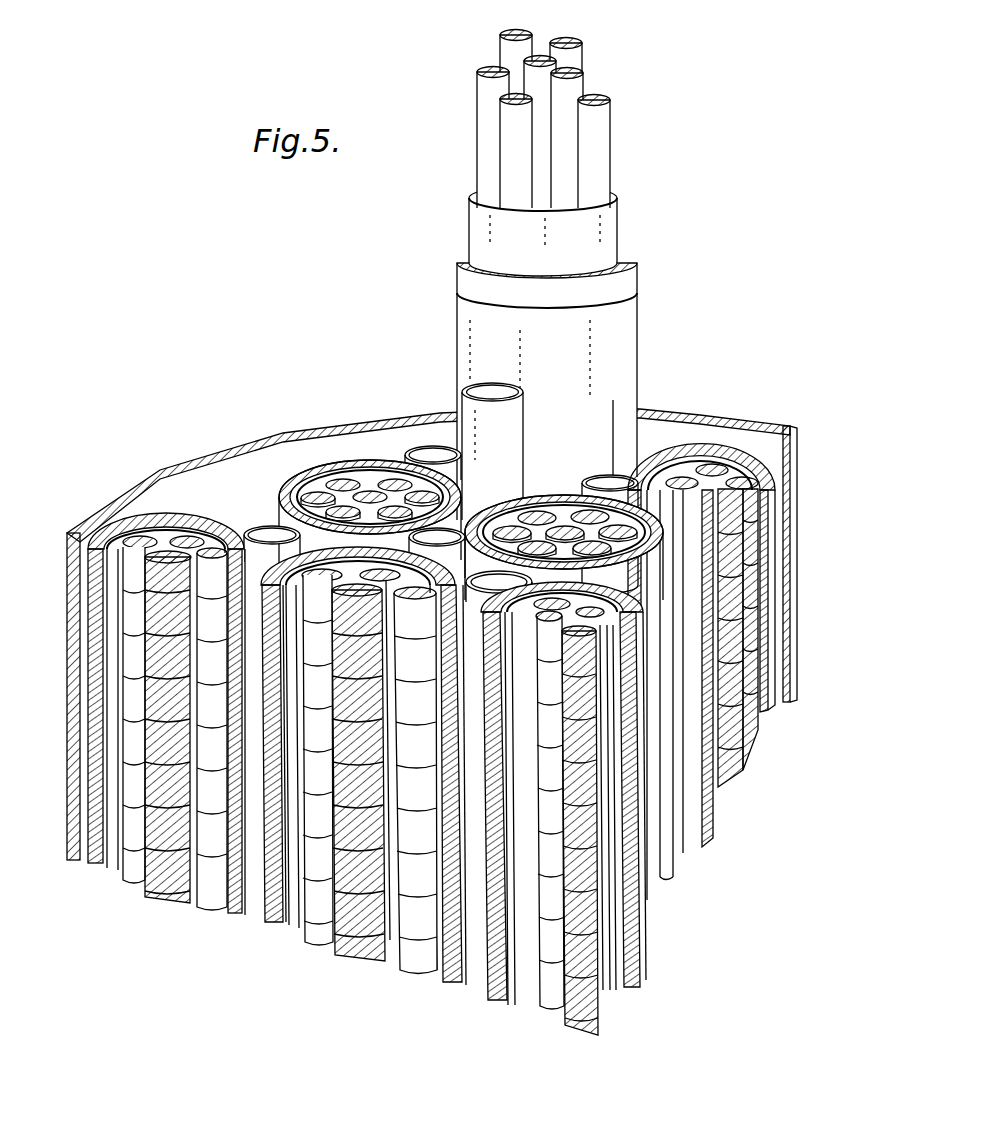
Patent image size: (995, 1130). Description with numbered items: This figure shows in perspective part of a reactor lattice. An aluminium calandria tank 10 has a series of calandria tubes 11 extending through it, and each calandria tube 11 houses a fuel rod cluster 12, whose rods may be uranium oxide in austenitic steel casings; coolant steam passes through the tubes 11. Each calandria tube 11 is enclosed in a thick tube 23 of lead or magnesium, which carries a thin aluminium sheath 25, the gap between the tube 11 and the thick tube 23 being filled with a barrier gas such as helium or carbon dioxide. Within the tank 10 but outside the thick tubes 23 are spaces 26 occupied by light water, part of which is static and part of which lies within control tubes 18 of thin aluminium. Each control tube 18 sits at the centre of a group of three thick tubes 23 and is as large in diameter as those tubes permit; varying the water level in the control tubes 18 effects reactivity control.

The calandria tank 10 is at (158, 470).
The calandria tube 11 is at (480, 218).
The fuel rod cluster 12 is at (601, 86).
The control tube 18 is at (250, 533).
The thick tube 23 is at (477, 285).
The aluminium sheath 25 is at (470, 316).
The spaces 26 is at (262, 882).